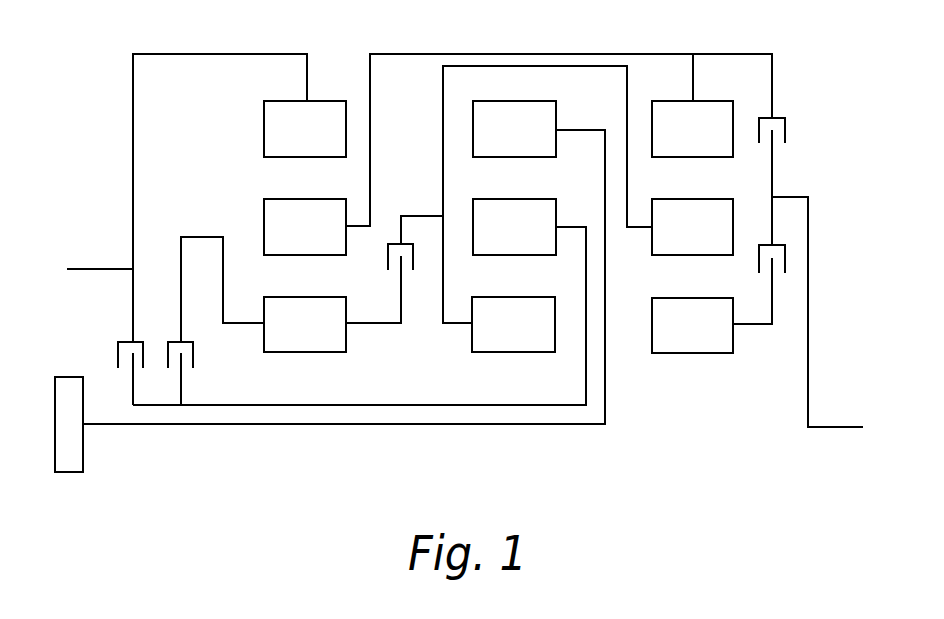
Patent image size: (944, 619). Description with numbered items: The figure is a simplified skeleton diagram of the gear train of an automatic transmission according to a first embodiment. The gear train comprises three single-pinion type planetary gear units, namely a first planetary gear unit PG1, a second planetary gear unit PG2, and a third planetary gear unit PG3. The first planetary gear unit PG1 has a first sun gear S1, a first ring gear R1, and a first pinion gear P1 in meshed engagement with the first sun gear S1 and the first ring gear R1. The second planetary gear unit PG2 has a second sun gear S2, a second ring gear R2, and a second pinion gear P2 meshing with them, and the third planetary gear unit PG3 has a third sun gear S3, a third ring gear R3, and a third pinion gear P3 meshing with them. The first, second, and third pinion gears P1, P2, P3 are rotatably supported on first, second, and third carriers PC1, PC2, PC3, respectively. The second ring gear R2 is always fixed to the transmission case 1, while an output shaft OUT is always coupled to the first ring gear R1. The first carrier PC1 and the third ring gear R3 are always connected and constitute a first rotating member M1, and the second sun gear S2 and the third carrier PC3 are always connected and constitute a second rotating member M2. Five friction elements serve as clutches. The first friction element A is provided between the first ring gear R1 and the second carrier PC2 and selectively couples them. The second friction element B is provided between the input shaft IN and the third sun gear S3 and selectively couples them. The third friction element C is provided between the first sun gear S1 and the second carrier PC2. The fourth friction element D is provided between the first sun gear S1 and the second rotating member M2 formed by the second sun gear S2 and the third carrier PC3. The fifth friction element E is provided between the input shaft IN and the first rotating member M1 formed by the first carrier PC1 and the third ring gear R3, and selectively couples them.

The transmission case 1 is at (83, 455).
The first friction element A is at (120, 373).
The second friction element B is at (763, 284).
The third friction element C is at (187, 373).
The fourth friction element D is at (394, 269).
The fifth friction element E is at (783, 181).
The first ring gear R1 is at (305, 129).
The first pinion gear P1 is at (305, 227).
The first sun gear S1 is at (305, 324).
The second ring gear R2 is at (514, 129).
The second pinion gear P2 is at (514, 227).
The second sun gear S2 is at (513, 324).
The third ring gear R3 is at (692, 129).
The third pinion gear P3 is at (692, 227).
The third sun gear S3 is at (692, 325).
The first planetary gear unit PG1 is at (305, 297).
The second planetary gear unit PG2 is at (514, 297).
The third planetary gear unit PG3 is at (692, 295).
The first carrier PC1 is at (355, 230).
The second carrier PC2 is at (574, 225).
The third carrier PC3 is at (638, 230).
The first rotating member M1 is at (483, 54).
The second rotating member M2 is at (583, 66).
The output shaft OUT is at (90, 272).
The input shaft IN is at (833, 430).